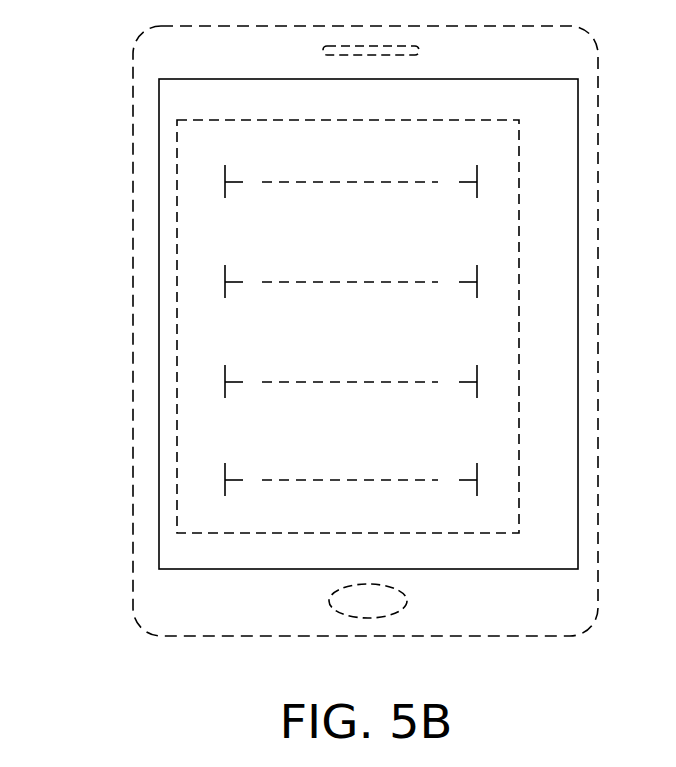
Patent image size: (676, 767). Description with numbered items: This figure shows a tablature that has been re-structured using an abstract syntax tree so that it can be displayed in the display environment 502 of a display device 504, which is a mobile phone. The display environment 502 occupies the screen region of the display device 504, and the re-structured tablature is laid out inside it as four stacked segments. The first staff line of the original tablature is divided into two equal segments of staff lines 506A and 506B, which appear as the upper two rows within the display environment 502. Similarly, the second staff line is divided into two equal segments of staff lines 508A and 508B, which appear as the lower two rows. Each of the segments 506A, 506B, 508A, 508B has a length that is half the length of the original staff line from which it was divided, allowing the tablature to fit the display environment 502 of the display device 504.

The display device 504 is at (133, 66).
The display environment 502 is at (387, 110).
The segment of staff line 506A is at (225, 182).
The segment of staff line 506B is at (225, 282).
The segment of staff line 508A is at (227, 382).
The segment of staff line 508B is at (227, 480).